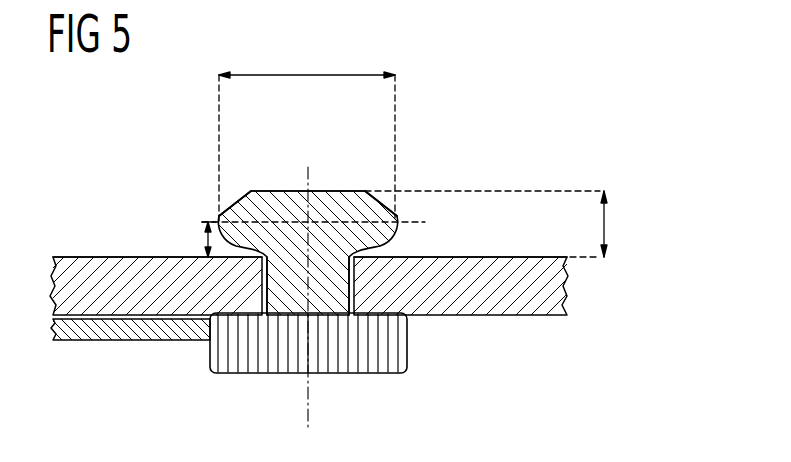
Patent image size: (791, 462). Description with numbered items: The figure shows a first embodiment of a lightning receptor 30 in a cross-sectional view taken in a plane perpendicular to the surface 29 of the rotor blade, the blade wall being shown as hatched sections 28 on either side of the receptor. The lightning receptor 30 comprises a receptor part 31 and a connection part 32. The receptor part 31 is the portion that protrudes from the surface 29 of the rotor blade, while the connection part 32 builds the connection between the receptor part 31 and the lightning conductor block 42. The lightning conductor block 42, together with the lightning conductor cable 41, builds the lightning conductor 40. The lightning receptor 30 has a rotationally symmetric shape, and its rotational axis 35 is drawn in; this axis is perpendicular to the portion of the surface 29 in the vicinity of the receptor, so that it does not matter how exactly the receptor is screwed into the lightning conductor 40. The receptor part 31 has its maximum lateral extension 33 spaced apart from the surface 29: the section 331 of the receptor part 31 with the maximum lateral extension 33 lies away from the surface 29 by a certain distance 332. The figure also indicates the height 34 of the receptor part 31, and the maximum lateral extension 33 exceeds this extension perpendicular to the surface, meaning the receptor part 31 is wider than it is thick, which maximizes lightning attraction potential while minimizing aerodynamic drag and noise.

The plate / component 28 is at (100, 268).
The surface of the rotor blade 29 is at (160, 257).
The lightning receptor 30 is at (287, 173).
The receptor part 31 is at (343, 191).
The connection part 32 is at (292, 295).
The maximum lateral extension 33 is at (309, 75).
The section of the receptor part with the maximum lateral extension 331 is at (219, 217).
The distance 332 is at (208, 224).
The head height 34 is at (610, 226).
The rotational axis 35 is at (310, 407).
The lightning conductor 40 is at (183, 383).
The lightning conductor cable 41 is at (122, 335).
The lightning conductor block 42 is at (395, 352).